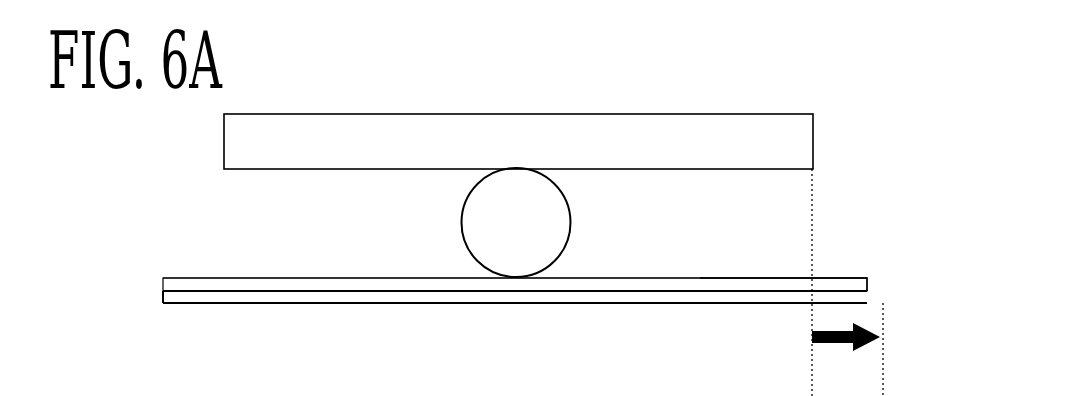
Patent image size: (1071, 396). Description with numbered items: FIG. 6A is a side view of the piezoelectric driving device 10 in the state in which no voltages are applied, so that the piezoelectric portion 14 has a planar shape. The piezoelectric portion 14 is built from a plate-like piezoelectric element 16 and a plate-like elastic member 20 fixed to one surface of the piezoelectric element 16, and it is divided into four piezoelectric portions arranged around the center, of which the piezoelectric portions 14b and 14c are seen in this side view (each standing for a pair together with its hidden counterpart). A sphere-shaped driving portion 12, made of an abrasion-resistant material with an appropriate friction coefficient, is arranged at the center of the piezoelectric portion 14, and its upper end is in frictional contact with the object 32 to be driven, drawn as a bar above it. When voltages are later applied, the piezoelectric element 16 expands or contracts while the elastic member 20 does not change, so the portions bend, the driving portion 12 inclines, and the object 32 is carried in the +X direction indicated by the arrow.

The piezoelectric driving device 10 is at (208, 261).
The driving portion 12 is at (571, 215).
The piezoelectric portion 14 is at (476, 323).
The piezoelectric portion 14b is at (613, 298).
The piezoelectric portion 14c is at (282, 292).
The piezoelectric element 16 is at (862, 296).
The elastic member 20 is at (838, 279).
The object to be driven 32 is at (757, 114).